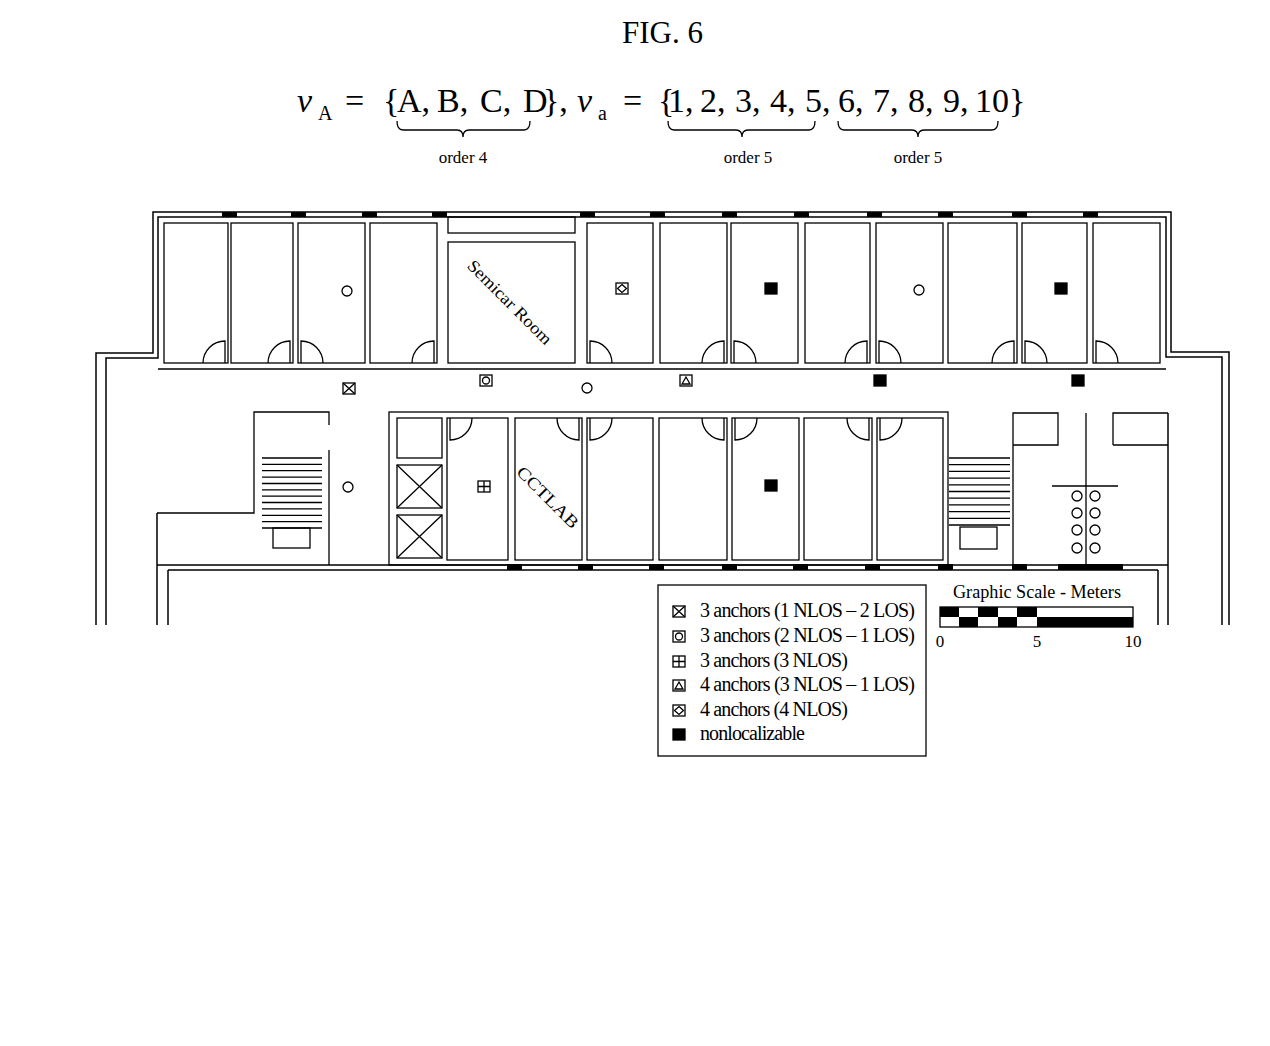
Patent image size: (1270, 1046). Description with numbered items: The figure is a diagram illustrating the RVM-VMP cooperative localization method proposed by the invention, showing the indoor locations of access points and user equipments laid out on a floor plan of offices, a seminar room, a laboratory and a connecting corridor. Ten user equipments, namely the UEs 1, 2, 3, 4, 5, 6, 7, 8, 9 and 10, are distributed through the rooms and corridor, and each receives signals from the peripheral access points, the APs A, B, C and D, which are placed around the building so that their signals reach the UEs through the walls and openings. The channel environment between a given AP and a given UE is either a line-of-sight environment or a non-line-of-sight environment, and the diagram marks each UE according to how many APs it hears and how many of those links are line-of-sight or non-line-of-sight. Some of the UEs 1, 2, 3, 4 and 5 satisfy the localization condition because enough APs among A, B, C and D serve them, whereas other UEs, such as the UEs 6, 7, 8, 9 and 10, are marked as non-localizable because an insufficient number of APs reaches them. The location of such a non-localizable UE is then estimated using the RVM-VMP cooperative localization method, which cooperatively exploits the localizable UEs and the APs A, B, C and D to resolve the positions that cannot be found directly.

The UE 1 is at (355, 398).
The UE 2 is at (490, 390).
The UE 3 is at (476, 497).
The UE 4 is at (687, 390).
The UE 5 is at (617, 298).
The UE 6 is at (764, 298).
The UE 7 is at (766, 495).
The UE 8 is at (885, 390).
The UE 9 is at (1055, 298).
The UE 10 is at (1085, 390).
The AP A is at (341, 292).
The AP B is at (356, 488).
The AP C is at (596, 390).
The AP D is at (910, 291).